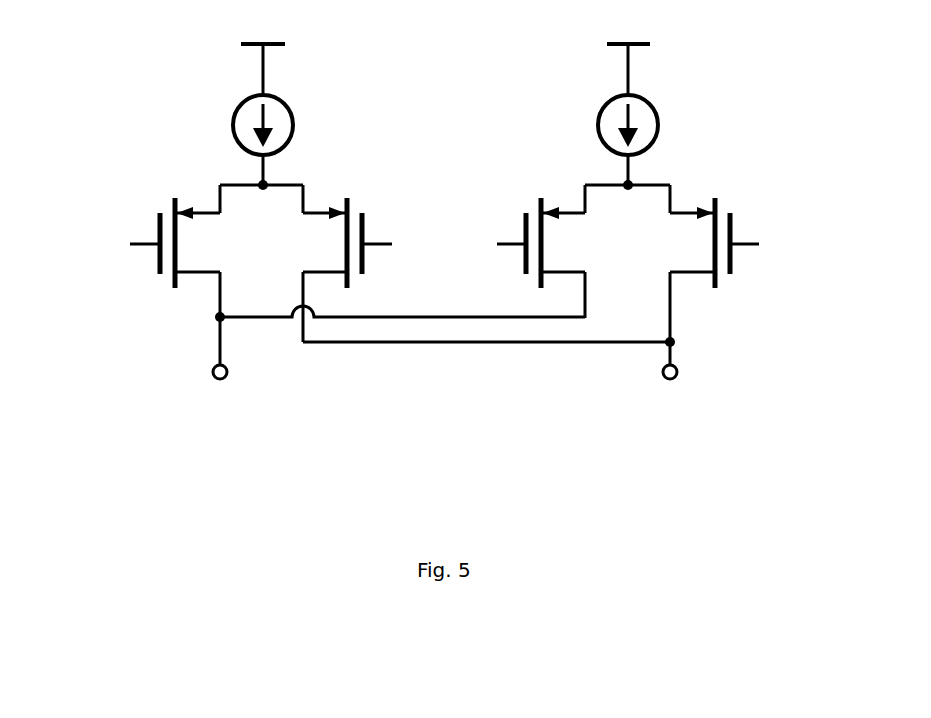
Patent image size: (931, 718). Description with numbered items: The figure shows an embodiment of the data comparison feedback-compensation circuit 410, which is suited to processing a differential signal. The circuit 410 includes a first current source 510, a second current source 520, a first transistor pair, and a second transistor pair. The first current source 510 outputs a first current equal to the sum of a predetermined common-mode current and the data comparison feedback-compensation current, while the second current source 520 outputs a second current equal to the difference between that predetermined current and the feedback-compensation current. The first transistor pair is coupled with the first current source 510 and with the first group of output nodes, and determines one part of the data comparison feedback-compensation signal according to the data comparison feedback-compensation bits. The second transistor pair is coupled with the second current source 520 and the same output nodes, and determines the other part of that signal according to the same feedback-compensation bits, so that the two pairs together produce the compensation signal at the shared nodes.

The data comparison feedback-compensation circuit 410 is at (77, 465).
The first current source 510 is at (237, 103).
The second current source 520 is at (653, 103).